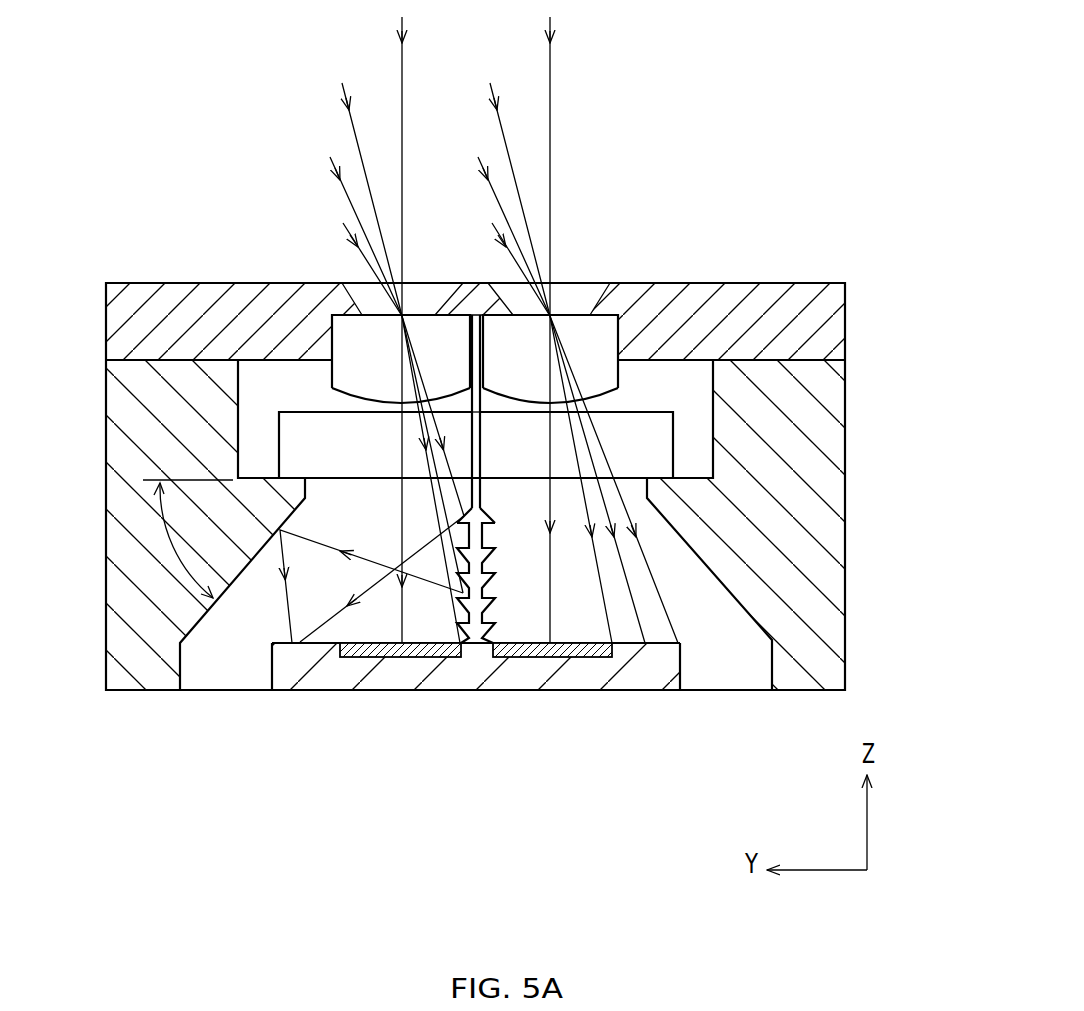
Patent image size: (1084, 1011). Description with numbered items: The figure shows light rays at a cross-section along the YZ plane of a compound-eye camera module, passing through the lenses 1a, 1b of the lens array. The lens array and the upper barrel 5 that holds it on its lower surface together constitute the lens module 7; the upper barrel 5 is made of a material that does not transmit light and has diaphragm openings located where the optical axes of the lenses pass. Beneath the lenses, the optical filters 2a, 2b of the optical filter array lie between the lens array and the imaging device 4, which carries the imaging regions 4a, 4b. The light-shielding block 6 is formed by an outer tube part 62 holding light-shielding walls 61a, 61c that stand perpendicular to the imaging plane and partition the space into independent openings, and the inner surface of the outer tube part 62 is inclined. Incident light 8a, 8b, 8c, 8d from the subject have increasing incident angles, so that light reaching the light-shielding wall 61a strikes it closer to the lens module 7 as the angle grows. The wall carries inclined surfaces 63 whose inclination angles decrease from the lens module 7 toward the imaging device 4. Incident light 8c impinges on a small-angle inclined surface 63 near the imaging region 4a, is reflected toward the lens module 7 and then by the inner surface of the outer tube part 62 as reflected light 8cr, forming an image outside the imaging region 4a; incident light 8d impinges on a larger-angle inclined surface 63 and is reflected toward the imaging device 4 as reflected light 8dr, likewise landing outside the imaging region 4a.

The lens 1a is at (348, 335).
The lens 1b is at (575, 330).
The optical filter 2a is at (305, 432).
The optical filter 2b is at (653, 430).
The imaging device 4 is at (643, 667).
The imaging region 4a is at (360, 653).
The imaging region 4b is at (583, 657).
The upper barrel 5 is at (838, 323).
The light-shielding block 6 is at (838, 517).
The light-shielding wall 61a is at (470, 657).
The light-shielding wall 61c is at (460, 663).
The outer tube part 62 is at (799, 667).
The inclined surface 63 is at (463, 516).
The lens module 7 is at (816, 261).
The incident light 8a is at (403, 93).
The incident light 8b is at (362, 152).
The incident light 8c is at (348, 197).
The incident light 8d is at (365, 263).
The reflected light 8cr is at (289, 612).
The reflected light 8dr is at (342, 612).